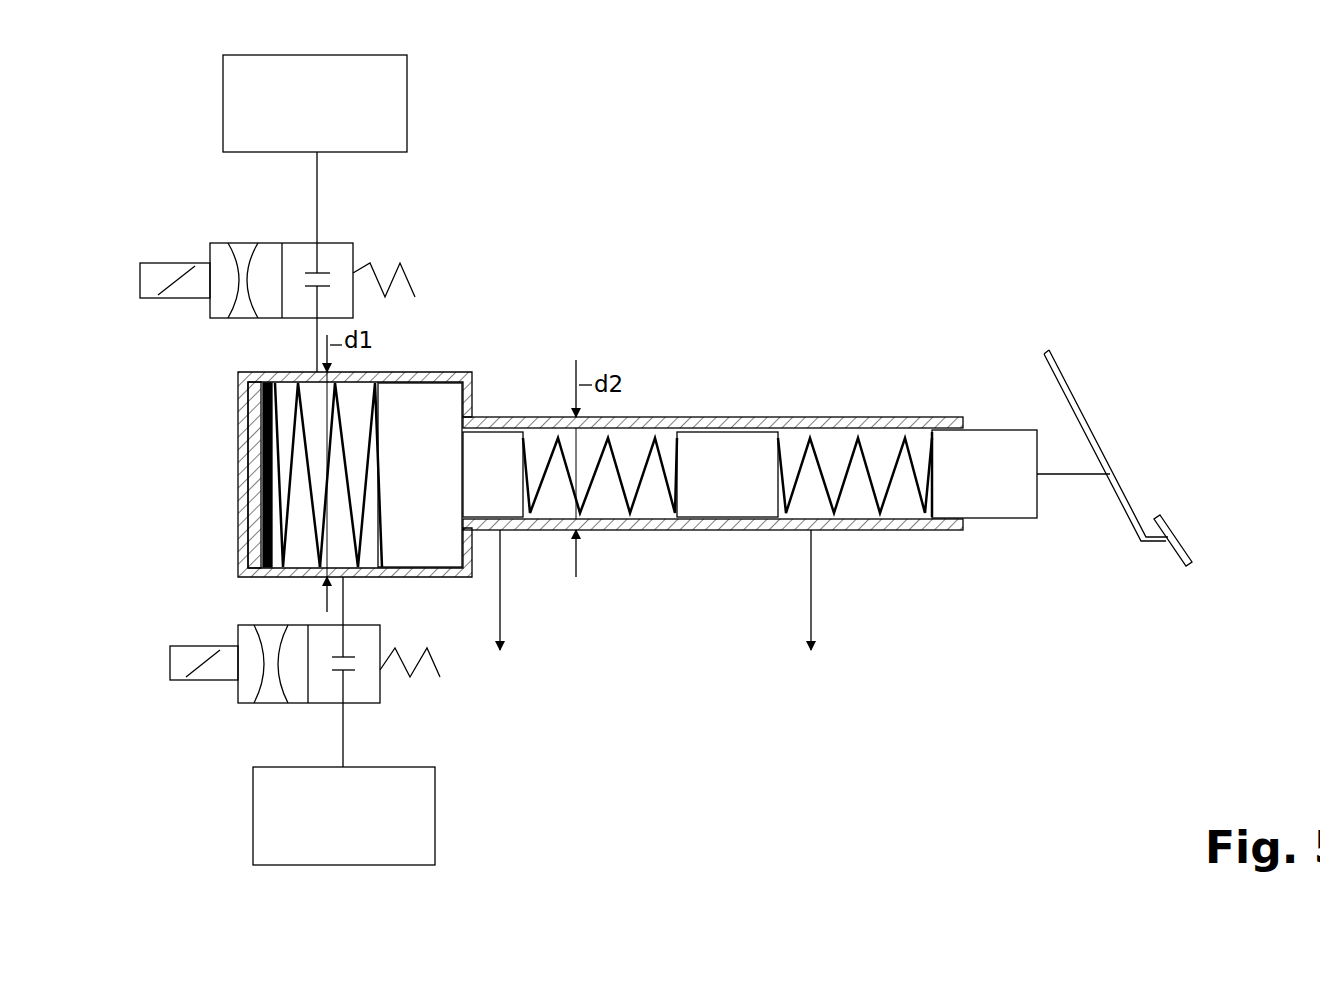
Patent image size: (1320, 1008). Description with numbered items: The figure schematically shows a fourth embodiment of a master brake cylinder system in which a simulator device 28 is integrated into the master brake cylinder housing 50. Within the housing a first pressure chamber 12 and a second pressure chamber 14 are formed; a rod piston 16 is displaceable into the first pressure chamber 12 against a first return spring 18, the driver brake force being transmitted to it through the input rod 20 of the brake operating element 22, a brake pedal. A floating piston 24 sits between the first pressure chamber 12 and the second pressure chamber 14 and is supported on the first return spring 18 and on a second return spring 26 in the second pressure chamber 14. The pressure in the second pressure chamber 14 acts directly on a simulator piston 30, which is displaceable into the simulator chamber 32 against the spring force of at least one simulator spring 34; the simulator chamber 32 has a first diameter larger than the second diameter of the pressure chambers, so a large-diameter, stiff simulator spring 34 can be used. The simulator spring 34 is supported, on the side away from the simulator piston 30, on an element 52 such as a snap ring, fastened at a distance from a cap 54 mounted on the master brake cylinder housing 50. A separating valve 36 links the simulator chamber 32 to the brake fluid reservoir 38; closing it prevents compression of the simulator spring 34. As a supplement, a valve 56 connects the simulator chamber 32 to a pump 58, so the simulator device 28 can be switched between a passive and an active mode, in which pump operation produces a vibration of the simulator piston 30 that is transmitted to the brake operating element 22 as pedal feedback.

The first pressure chamber 12 is at (868, 505).
The second pressure chamber 14 is at (607, 498).
The rod piston 16 is at (1003, 502).
The first return spring 18 is at (908, 505).
The input rod 20 is at (1078, 478).
The brake operating element 22 is at (1110, 463).
The floating piston 24 is at (722, 497).
The second return spring 26 is at (645, 500).
The simulator device 28 is at (238, 585).
The simulator piston 30 is at (437, 395).
The simulator chamber 32 is at (300, 398).
The simulator spring 34 is at (363, 395).
The separating valve 36 is at (350, 243).
The brake fluid reservoir 38 is at (392, 102).
The master brake cylinder housing 50 is at (930, 417).
The element 52 is at (250, 405).
The cap 54 is at (246, 490).
The valve 56 is at (173, 660).
The pump 58 is at (278, 812).